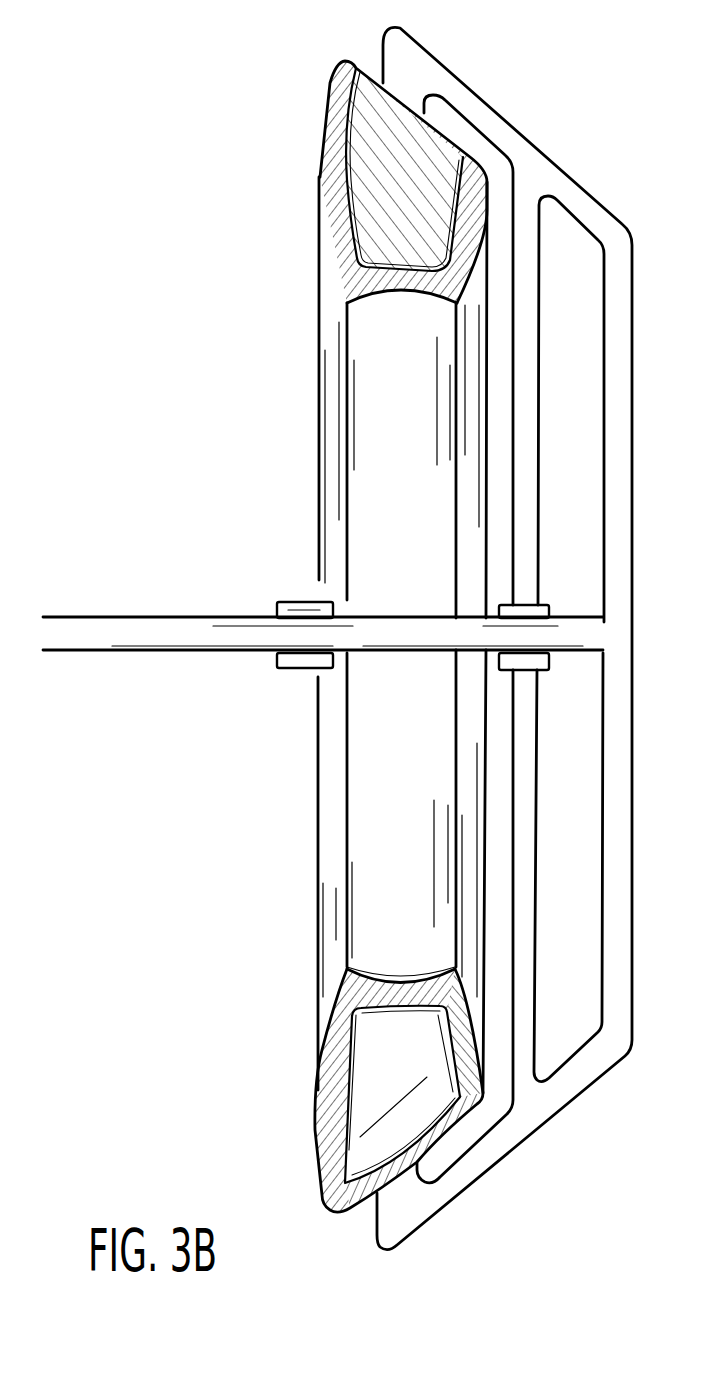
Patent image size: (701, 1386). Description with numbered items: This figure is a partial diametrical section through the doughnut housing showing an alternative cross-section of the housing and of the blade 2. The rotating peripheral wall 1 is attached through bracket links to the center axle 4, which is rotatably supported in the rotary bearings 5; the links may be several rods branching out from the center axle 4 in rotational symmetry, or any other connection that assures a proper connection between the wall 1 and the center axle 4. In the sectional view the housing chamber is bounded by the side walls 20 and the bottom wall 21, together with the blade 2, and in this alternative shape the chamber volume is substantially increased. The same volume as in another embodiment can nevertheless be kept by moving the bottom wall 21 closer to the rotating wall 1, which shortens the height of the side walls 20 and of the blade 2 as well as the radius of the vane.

The peripheral wall 1 is at (368, 82).
The side walls 20 is at (333, 170).
The bottom wall 21 is at (378, 283).
The blade 2 is at (398, 210).
The center axle 4 is at (389, 643).
The rotary bearings 5 is at (313, 667).